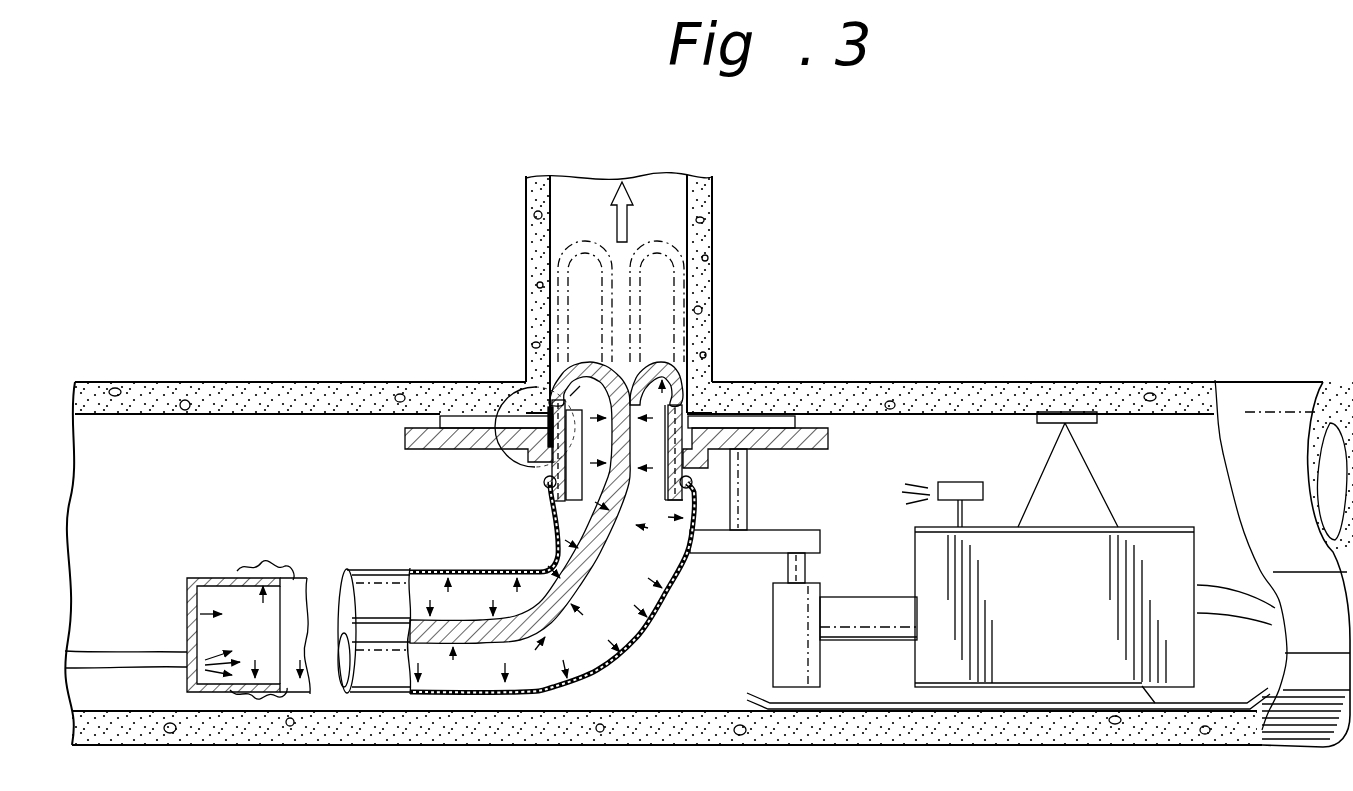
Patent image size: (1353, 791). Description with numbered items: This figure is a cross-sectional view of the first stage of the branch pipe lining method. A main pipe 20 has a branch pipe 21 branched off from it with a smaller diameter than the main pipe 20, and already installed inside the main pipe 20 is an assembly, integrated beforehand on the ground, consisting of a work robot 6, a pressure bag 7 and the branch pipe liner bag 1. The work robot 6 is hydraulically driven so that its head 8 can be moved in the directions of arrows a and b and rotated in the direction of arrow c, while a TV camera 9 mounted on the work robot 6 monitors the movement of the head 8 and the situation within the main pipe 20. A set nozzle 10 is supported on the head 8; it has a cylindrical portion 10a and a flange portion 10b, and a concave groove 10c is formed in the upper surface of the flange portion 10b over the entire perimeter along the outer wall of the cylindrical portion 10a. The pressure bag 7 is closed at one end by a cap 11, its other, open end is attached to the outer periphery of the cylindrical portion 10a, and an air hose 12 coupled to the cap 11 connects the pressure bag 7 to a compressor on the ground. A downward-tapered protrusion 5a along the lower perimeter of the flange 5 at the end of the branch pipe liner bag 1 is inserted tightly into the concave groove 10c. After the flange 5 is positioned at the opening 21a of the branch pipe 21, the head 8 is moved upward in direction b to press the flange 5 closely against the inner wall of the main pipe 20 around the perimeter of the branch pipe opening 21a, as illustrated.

The branch pipe liner bag 1 is at (546, 502).
The flange 5 is at (782, 416).
The protrusion 5a is at (545, 458).
The work robot 6 is at (1147, 532).
The pressure bag 7 is at (612, 665).
The head 8 is at (773, 668).
The TV camera 9 is at (958, 487).
The set nozzle 10 is at (403, 458).
The cylindrical portion 10a is at (652, 536).
The flange portion 10b is at (783, 450).
The concave groove 10c is at (548, 488).
The cap 11 is at (200, 578).
The air hose 12 is at (125, 655).
The main pipe 20 is at (1047, 386).
The branch pipe 21 is at (712, 218).
The opening 21a is at (553, 368).